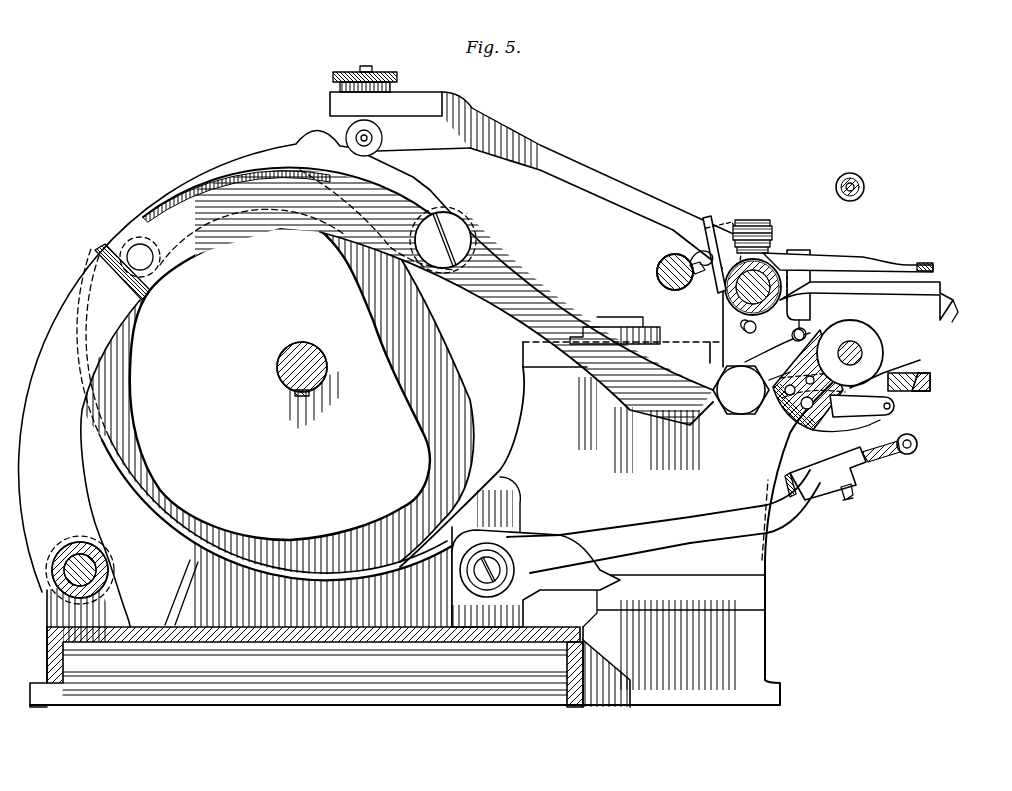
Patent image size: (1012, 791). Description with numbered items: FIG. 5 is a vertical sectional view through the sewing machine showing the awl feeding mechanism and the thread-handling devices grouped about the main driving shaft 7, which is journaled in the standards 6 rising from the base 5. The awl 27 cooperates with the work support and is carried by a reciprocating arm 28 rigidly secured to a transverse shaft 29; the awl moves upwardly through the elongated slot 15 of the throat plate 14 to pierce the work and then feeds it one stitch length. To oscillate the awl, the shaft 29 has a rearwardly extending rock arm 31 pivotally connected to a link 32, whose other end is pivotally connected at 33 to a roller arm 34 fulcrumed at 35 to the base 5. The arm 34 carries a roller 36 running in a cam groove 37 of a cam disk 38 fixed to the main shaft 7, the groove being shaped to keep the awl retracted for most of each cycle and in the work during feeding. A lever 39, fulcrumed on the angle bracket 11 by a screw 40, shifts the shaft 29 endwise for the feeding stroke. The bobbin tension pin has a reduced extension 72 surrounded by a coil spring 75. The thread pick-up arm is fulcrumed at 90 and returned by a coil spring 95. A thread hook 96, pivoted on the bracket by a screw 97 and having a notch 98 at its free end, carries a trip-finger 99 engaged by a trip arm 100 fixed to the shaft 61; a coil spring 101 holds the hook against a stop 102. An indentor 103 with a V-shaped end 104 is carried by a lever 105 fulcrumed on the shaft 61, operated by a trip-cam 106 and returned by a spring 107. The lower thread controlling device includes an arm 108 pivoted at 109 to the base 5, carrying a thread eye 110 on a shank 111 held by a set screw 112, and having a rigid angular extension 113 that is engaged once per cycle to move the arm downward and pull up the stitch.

The base 5 is at (85, 660).
The standards 6 is at (190, 568).
The main driving shaft 7 is at (322, 376).
The angle bracket 11 is at (766, 558).
The throat plate 14 is at (932, 376).
The elongated slot 15 is at (922, 398).
The awl 27 is at (825, 424).
The arm 28 is at (880, 376).
The transverse shaft 29 is at (862, 348).
The rock arm 31 is at (766, 368).
The link 32 is at (536, 328).
The pivotal connection 33 is at (463, 241).
The roller arm 34 is at (372, 200).
The fulcrum 35 is at (62, 575).
The roller 36 is at (137, 254).
The cam groove 37 is at (412, 366).
The cam disk 38 is at (256, 517).
The lever 39 is at (708, 362).
The screw 40 is at (608, 317).
The shaft 61 is at (733, 304).
The reduced extension 72 is at (850, 183).
The coil spring 75 is at (863, 185).
The fulcrum 90 is at (690, 275).
The coil spring 95 is at (657, 268).
The thread hook 96 is at (845, 260).
The screw 97 is at (752, 218).
The notch 98 is at (928, 262).
The trip-finger 99 is at (790, 250).
The trip arm 100 is at (735, 290).
The coil spring 101 is at (735, 225).
The stop 102 is at (805, 248).
The indentor 103 is at (866, 290).
The V-shaped end 104 is at (955, 314).
The lever 105 is at (613, 183).
The trip-cam 106 is at (318, 137).
The spring 107 is at (703, 233).
The arm 108 is at (807, 510).
The pivot 109 is at (468, 580).
The thread eye 110 is at (916, 440).
The shank 111 is at (880, 463).
The set screw 112 is at (854, 496).
The angular extension 113 is at (508, 497).